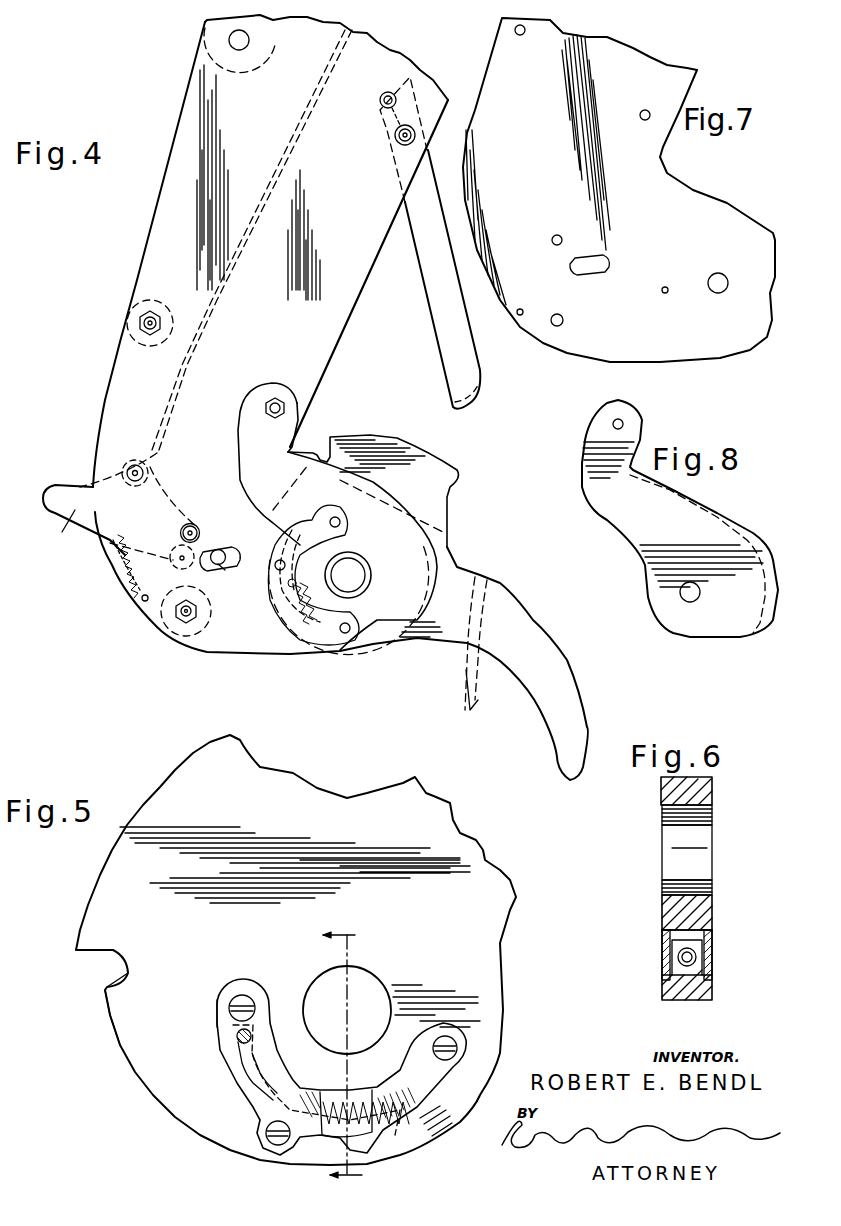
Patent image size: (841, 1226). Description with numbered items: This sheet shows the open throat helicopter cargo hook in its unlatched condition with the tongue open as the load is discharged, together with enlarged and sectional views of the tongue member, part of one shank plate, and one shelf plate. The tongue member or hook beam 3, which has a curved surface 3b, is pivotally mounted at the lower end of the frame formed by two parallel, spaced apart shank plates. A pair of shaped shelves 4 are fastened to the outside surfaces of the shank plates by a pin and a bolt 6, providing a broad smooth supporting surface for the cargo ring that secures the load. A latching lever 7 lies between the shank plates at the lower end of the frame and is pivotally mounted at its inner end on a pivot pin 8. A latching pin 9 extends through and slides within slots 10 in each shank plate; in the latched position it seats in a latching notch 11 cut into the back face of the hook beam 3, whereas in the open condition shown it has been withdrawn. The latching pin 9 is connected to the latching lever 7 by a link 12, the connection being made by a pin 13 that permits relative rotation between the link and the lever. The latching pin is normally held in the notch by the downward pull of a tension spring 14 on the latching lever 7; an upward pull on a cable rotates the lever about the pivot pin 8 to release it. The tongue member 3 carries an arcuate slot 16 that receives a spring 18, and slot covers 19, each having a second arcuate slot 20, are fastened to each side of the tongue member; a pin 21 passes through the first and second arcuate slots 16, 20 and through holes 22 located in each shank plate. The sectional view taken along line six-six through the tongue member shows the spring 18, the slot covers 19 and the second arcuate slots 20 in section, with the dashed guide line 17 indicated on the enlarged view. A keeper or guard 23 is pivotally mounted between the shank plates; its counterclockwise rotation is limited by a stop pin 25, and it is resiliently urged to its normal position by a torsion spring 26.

In FIG. 4, the tongue member or hook beam 3 is at (558, 658).
In FIG. 5, the tongue member or hook beam 3 is at (503, 975).
In FIG. 5, the curved surface 3b is at (127, 1052).
In FIG. 8, the shaped shelf 4 is at (590, 506).
In FIG. 5, the bolt 6 is at (334, 1055).
In FIG. 4, the latching lever 7 is at (72, 520).
In FIG. 4, the pivot pin 8 is at (141, 474).
In FIG. 4, the latching pin 9 is at (224, 562).
In FIG. 4, the slot 10 is at (208, 547).
In FIG. 7, the slot 10 is at (600, 257).
In FIG. 4, the latching notch 11 is at (233, 552).
In FIG. 5, the latching notch 11 is at (110, 975).
In FIG. 4, the link 12 is at (192, 565).
In FIG. 4, the pin 13 is at (173, 553).
In FIG. 4, the tension spring 14 is at (123, 584).
In FIG. 5, the arcuate slot 16 is at (370, 1140).
In FIG. 5, the dashed guide 17 is at (248, 1075).
In FIG. 5, the spring 18 is at (346, 1140).
In FIG. 6, the spring 18 is at (702, 958).
In FIG. 5, the slot cover 19 is at (218, 1030).
In FIG. 6, the slot cover 19 is at (668, 976).
In FIG. 5, the second arcuate slot 20 is at (242, 1057).
In FIG. 6, the second arcuate slot 20 is at (664, 955).
In FIG. 5, the pin 21 is at (238, 1041).
In FIG. 7, the hole 22 is at (667, 287).
In FIG. 4, the keeper or guard 23 is at (447, 342).
In FIG. 4, the stop pin 25 is at (388, 91).
In FIG. 4, the torsion spring 26 is at (413, 105).